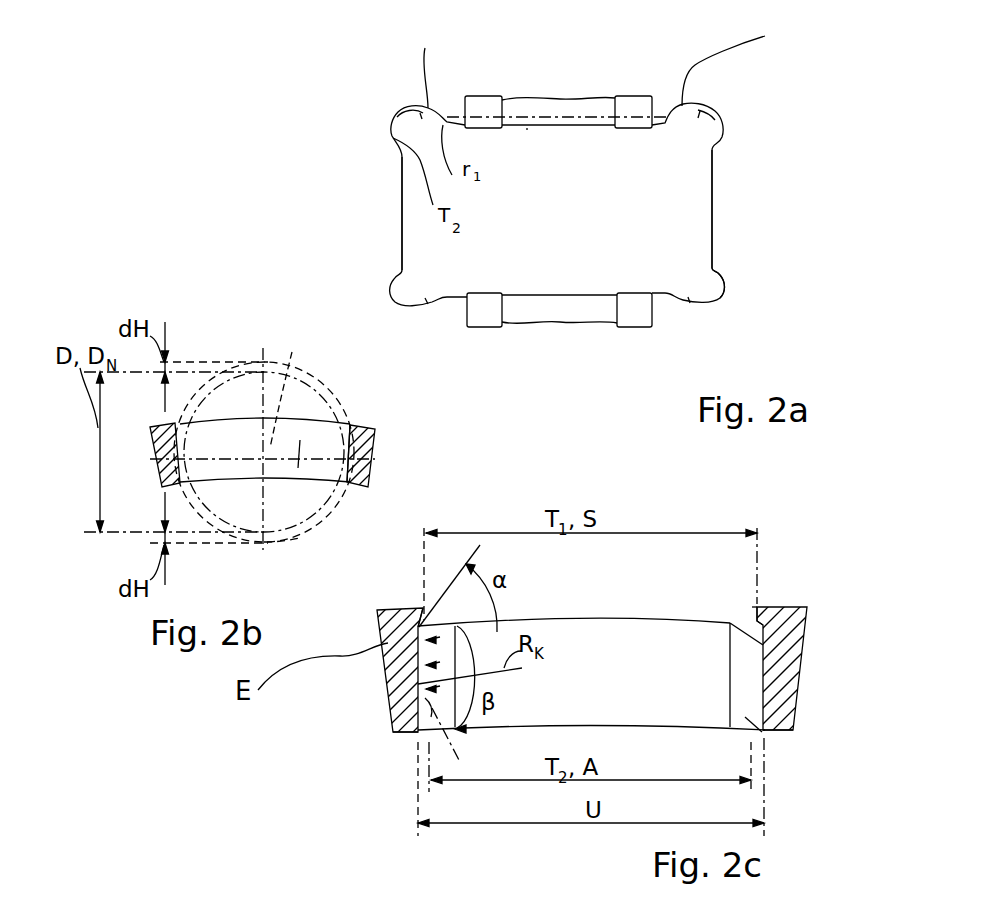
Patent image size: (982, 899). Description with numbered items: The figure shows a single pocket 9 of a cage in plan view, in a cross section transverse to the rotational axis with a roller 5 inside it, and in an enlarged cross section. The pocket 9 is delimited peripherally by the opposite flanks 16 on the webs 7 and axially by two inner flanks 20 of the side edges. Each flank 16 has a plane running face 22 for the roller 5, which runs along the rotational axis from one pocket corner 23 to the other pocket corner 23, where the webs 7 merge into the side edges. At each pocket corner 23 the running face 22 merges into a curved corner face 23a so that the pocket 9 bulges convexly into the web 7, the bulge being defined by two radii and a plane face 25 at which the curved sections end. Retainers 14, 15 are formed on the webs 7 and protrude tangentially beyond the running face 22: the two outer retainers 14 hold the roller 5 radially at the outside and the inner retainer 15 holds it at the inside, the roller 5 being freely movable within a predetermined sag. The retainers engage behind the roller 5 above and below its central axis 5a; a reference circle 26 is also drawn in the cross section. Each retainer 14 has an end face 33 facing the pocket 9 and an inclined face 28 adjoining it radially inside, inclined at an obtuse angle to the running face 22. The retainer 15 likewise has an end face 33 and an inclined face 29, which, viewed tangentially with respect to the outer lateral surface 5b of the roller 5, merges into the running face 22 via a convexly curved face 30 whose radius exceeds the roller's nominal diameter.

In FIG. 2B, the roller 5 is at (312, 405).
In FIG. 2B, the central axis 5a is at (289, 387).
In FIG. 2B, the outer lateral surface 5b is at (286, 543).
In FIG. 2A, the web 7 is at (545, 107).
In FIG. 2B, the web 7 is at (152, 450).
In FIG. 2A, the pocket 9 is at (682, 188).
In FIG. 2A, the retainer 14 is at (485, 102).
In FIG. 2B, the retainer 14 is at (155, 426).
In FIG. 2C, the retainer 14 is at (420, 608).
In FIG. 2B, the retainer 15 is at (346, 483).
In FIG. 2C, the retainer 15 is at (398, 735).
In FIG. 2A, the flank 16 is at (525, 128).
In FIG. 2C, the flank 16 is at (762, 668).
In FIG. 2A, the inner flank 20 is at (402, 228).
In FIG. 2B, the inner flank 20 is at (299, 464).
In FIG. 2A, the running face 22 is at (580, 112).
In FIG. 2C, the running face 22 is at (457, 633).
In FIG. 2A, the pocket corner 23 is at (729, 289).
In FIG. 2A, the corner face 23a is at (398, 119).
In FIG. 2A, the plane face 25 is at (604, 60).
In FIG. 2B, the reference circle 26 is at (224, 458).
In FIG. 2C, the inclined face 28 is at (424, 619).
In FIG. 2C, the inclined face 29 is at (425, 703).
In FIG. 2C, the face 30 is at (418, 679).
In FIG. 2C, the end face 33 is at (757, 600).